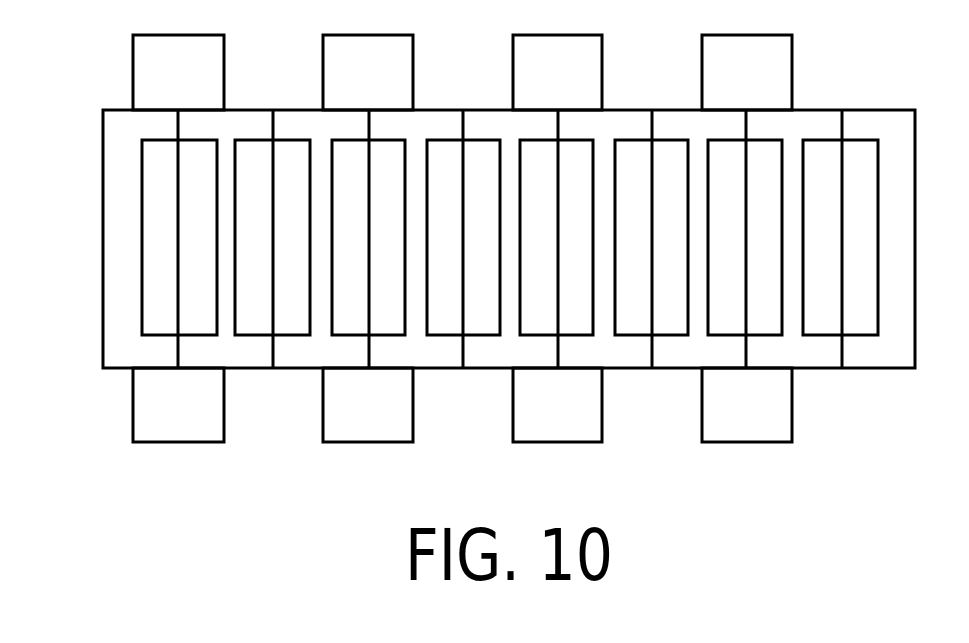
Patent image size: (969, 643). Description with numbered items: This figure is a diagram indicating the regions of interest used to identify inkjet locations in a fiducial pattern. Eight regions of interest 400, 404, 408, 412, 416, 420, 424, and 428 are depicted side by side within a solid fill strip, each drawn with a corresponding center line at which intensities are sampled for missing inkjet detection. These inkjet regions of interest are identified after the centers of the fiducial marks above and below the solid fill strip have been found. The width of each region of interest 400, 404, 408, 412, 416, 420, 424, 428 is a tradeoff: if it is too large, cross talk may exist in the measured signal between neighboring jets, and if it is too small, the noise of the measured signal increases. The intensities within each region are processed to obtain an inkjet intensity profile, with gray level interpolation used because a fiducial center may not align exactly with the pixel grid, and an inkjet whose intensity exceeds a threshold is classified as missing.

The region of interest 400 is at (140, 178).
The region of interest 404 is at (247, 140).
The region of interest 408 is at (392, 140).
The region of interest 412 is at (487, 337).
The region of interest 416 is at (582, 140).
The region of interest 420 is at (677, 337).
The region of interest 424 is at (770, 140).
The region of interest 428 is at (865, 337).